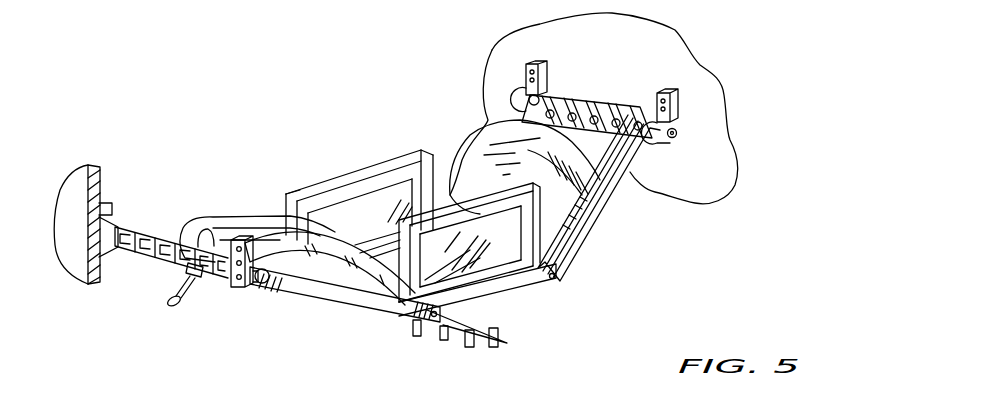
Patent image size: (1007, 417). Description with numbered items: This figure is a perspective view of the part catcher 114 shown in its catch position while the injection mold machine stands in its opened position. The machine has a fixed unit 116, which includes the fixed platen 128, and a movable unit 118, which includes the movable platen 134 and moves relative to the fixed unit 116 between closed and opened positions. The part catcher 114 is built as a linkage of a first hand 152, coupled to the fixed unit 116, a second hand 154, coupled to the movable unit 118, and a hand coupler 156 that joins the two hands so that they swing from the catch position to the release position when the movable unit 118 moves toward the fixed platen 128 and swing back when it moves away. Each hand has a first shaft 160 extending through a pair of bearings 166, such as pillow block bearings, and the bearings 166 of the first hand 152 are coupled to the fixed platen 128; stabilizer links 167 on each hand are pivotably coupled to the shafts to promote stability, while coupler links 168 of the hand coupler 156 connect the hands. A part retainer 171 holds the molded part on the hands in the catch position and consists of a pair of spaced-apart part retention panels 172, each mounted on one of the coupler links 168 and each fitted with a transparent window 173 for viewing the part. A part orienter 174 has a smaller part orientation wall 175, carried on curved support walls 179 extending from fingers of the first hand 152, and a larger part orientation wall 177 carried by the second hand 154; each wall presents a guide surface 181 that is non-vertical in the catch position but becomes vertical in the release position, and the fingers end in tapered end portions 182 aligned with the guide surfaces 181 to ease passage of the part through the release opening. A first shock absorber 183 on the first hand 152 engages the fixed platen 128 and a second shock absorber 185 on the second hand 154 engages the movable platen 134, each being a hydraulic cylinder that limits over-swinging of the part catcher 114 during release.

The part catcher 114 is at (287, 176).
The fixed unit 116 is at (488, 44).
The movable unit 118 is at (112, 185).
The fixed platen 128 is at (665, 58).
The movable platen 134 is at (77, 263).
The first hand 152 is at (670, 252).
The second hand 154 is at (336, 343).
The hand coupler 156 is at (564, 314).
The first shaft 160 is at (278, 283).
The bearings 166 is at (107, 215).
The stabilizer links 167 is at (390, 300).
The coupler links 168 is at (375, 247).
The part retainer 171 is at (406, 147).
The part retention panels 172 is at (295, 184).
The window 173 is at (355, 210).
The part orienter 174 is at (268, 215).
The smaller part orientation wall 175 is at (462, 194).
The larger part orientation wall 177 is at (240, 218).
The support walls 179 is at (562, 203).
The guide surface 181 is at (376, 218).
The tapered end portions 182 is at (418, 322).
The first shock absorber 183 is at (583, 118).
The second shock absorber 185 is at (203, 236).